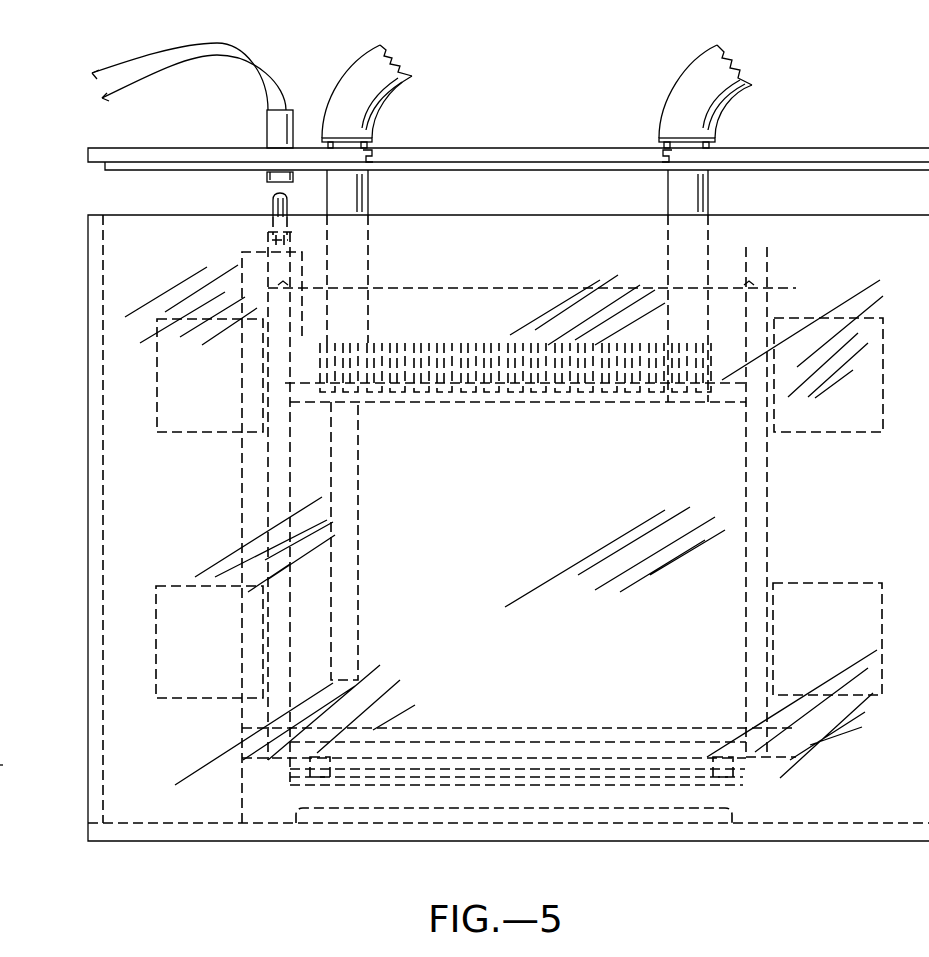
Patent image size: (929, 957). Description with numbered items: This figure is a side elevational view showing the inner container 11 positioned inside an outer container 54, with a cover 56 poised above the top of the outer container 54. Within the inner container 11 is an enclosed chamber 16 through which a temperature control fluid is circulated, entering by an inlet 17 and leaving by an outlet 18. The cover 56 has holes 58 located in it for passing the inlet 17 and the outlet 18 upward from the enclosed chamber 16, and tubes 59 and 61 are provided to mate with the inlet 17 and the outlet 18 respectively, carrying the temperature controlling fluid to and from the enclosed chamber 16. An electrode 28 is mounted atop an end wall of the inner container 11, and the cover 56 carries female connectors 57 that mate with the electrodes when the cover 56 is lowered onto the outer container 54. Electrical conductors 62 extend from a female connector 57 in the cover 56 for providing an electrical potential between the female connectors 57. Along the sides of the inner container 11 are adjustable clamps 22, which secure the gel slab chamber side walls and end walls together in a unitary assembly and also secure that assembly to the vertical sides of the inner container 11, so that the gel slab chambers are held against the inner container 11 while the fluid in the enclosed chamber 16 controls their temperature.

The inner container 11 is at (12, 783).
The enclosed chamber 16 is at (545, 523).
The inlet 17 is at (370, 190).
The outlet 18 is at (668, 188).
The adjustable clamps 22 is at (158, 418).
The electrode 28 is at (271, 198).
The outer container 54 is at (88, 503).
The cover 56 is at (788, 148).
The female connectors 57 is at (267, 125).
The holes 58 is at (372, 145).
The tube 59 is at (408, 80).
The tube 61 is at (757, 80).
The electrical conductors 62 is at (96, 91).